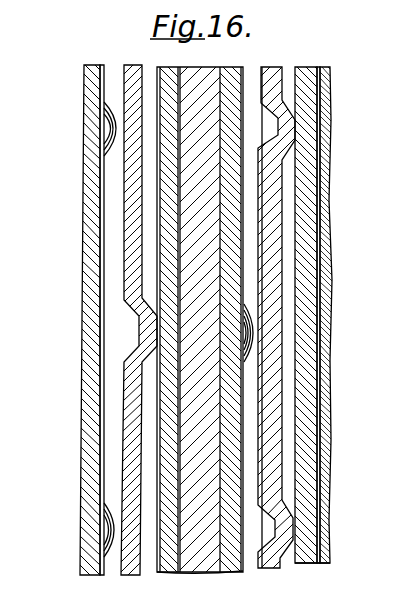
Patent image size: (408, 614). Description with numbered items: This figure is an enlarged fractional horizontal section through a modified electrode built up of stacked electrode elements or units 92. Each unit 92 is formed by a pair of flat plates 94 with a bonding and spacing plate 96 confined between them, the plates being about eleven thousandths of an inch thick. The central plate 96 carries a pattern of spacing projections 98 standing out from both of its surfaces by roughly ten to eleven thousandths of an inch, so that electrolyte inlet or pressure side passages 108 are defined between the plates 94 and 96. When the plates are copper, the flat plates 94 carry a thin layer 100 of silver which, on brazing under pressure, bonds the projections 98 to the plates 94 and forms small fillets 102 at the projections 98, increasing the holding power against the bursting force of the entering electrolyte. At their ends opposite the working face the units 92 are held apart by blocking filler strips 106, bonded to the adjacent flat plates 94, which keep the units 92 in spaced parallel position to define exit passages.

The electrode element or unit 92 is at (82, 578).
The flat plate 94 is at (163, 456).
The bonding and spacing plate 96 is at (140, 250).
The spacing projection 98 is at (110, 128).
The layer of silver 100 is at (155, 390).
The fillet 102 is at (150, 352).
The blocking filler strip 106 is at (200, 574).
The annular gap 108 is at (149, 196).